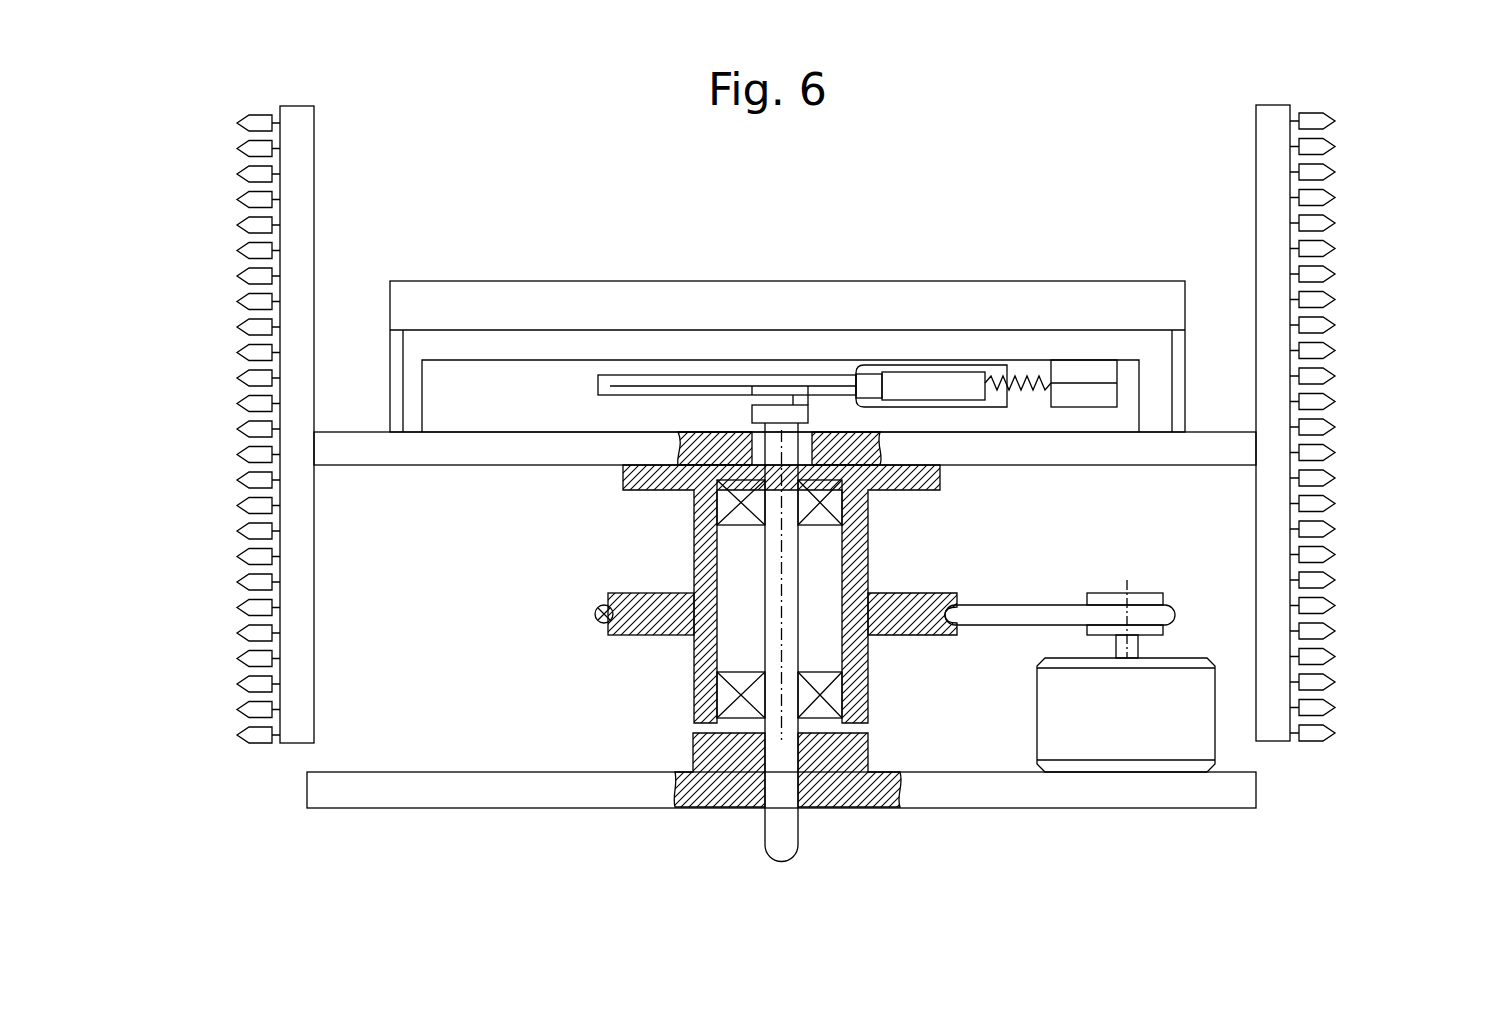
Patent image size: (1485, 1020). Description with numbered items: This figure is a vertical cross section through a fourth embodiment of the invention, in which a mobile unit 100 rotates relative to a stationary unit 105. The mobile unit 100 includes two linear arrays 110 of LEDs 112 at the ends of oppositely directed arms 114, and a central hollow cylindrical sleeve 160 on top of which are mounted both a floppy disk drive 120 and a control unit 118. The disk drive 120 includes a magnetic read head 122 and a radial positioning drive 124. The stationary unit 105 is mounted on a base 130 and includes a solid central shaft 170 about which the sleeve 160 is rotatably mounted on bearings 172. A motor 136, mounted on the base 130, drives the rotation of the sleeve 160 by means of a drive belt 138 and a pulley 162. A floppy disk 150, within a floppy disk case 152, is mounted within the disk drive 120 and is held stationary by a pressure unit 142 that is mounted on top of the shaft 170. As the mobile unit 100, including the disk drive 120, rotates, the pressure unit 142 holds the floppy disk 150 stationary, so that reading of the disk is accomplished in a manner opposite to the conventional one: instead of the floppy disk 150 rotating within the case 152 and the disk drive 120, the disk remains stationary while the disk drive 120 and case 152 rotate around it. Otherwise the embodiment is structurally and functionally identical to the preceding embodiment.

The mobile unit 100 is at (335, 209).
The stationary unit 105 is at (458, 740).
The linear arrays 110 is at (1270, 182).
The LEDs 112 is at (256, 197).
The arms 114 is at (369, 453).
The control unit 118 is at (764, 317).
The floppy disk drive 120 is at (489, 397).
The magnetic read head 122 is at (945, 365).
The radial positioning drive 124 is at (1099, 382).
The base 130 is at (604, 787).
The motor 136 is at (1149, 721).
The drive belt 138 is at (596, 616).
The pressure unit 142 is at (770, 415).
The floppy disk 150 is at (665, 386).
The floppy disk case 152 is at (600, 392).
The central hollow cylindrical sleeve 160 is at (632, 490).
The pulley 162 is at (634, 617).
The solid central shaft 170 is at (786, 588).
The bearings 172 is at (836, 499).